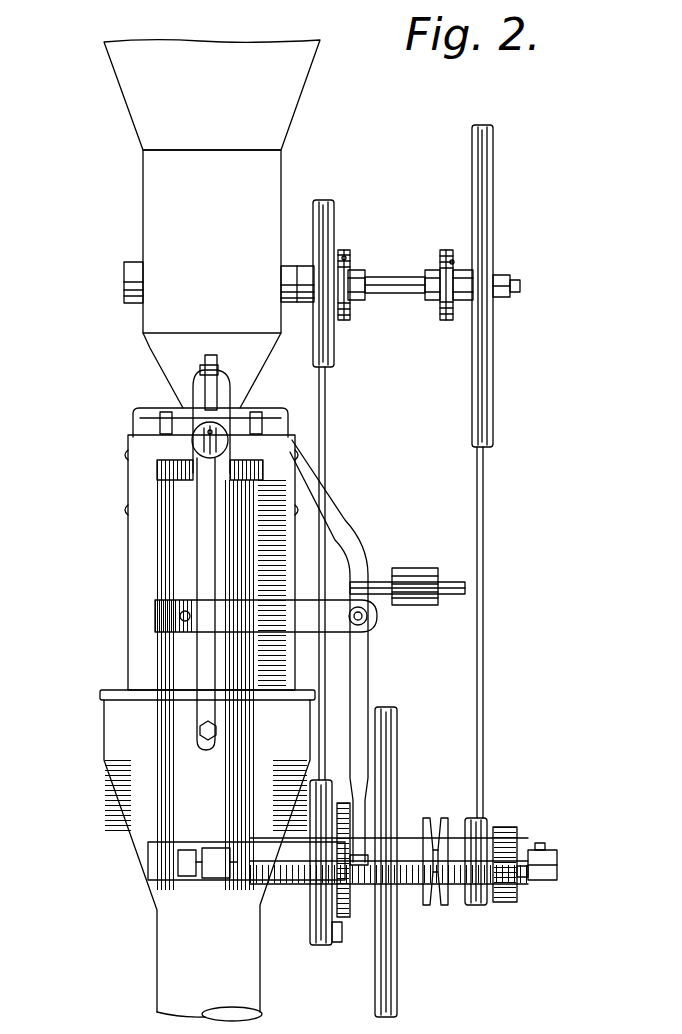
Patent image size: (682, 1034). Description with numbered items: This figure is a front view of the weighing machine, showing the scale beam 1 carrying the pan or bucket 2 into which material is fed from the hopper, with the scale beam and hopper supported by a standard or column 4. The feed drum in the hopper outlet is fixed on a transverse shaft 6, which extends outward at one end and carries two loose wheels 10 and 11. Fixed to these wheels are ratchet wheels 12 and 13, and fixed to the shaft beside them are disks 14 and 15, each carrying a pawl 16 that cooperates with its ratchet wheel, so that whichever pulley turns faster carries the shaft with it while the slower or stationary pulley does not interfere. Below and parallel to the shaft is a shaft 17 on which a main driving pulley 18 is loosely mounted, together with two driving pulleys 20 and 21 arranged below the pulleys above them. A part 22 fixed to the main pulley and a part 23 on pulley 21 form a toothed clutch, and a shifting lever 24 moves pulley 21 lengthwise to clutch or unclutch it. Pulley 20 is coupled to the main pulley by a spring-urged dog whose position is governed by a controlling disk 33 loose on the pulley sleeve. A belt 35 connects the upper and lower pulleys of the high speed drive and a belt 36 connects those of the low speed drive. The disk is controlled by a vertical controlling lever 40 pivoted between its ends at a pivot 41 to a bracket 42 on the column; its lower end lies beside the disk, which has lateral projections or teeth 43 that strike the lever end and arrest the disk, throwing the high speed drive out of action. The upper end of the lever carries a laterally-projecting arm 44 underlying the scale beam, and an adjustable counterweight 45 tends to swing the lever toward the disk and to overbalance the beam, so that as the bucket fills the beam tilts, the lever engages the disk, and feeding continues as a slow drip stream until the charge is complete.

The scale beam 1 is at (165, 450).
The pan or bucket 2 is at (138, 558).
The standard or column 4 is at (168, 940).
The shaft 6 is at (384, 288).
The loose wheel 10 is at (334, 210).
The loose wheel 11 is at (493, 170).
The ratchet wheel 12 is at (345, 268).
The ratchet wheel 13 is at (449, 322).
The disk 14 is at (346, 308).
The disk 15 is at (442, 307).
The pawl 16 is at (347, 255).
The shaft 17 is at (560, 858).
The main driving pulley 18 is at (392, 978).
The driving pulley 20 is at (310, 930).
The driving pulley 21 is at (488, 906).
The clutch part 22 is at (455, 880).
The clutch part 23 is at (460, 888).
The shifting lever 24 is at (517, 832).
The controlling disk 33 is at (337, 942).
The belt 35 is at (326, 450).
The belt 36 is at (485, 532).
The controlling lever 40 is at (360, 672).
The pivot 41 is at (370, 622).
The bracket 42 is at (266, 616).
The lateral projections or teeth 43 is at (345, 897).
The laterally-projecting arm 44 is at (292, 440).
The adjustable counterweight 45 is at (410, 570).